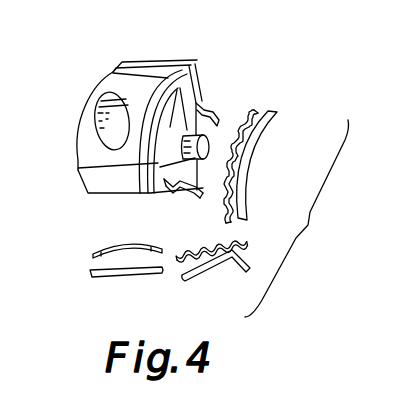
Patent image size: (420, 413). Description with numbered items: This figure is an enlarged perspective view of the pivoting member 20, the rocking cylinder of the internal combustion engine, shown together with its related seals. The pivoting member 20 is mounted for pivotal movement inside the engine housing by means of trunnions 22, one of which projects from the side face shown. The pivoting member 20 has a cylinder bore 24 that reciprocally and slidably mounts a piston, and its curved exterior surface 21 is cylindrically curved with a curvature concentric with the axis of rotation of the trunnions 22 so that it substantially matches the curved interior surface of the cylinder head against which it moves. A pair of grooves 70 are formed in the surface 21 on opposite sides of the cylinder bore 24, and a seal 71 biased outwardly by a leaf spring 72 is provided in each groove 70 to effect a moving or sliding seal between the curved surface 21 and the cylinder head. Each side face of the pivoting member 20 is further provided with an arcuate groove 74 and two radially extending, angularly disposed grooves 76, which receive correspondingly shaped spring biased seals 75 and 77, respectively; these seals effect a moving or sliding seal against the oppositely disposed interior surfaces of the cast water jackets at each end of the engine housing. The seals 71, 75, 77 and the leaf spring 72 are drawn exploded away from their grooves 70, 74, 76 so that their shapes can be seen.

The pivoting member 20 is at (198, 72).
The curved exterior surface 21 is at (84, 155).
The trunnions 22 is at (211, 144).
The cylinder bore 24 is at (96, 119).
The groove 70 is at (113, 72).
The seal 71 is at (124, 278).
The leaf spring 72 is at (145, 248).
The arcuate groove 74 is at (202, 82).
The spring biased seal 75 is at (258, 135).
The radially extending grooves 76 is at (205, 103).
The spring biased seal 77 is at (230, 266).